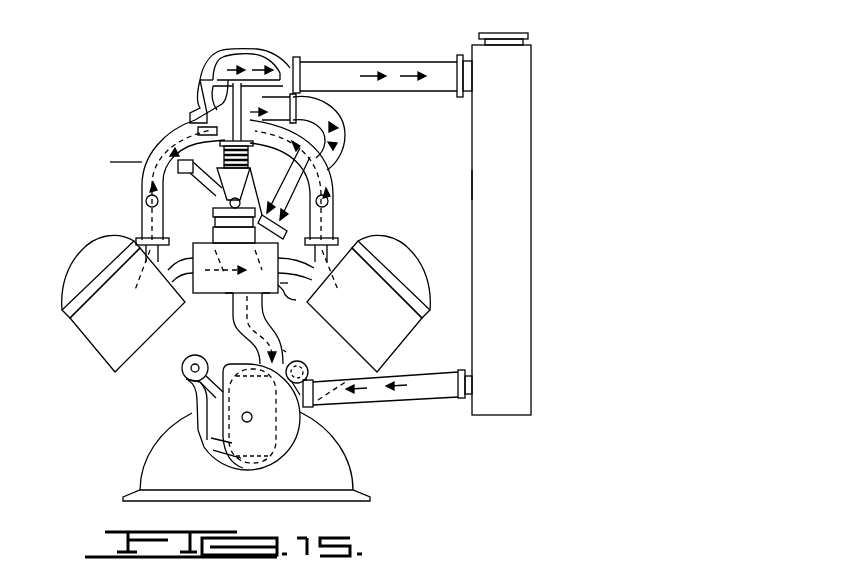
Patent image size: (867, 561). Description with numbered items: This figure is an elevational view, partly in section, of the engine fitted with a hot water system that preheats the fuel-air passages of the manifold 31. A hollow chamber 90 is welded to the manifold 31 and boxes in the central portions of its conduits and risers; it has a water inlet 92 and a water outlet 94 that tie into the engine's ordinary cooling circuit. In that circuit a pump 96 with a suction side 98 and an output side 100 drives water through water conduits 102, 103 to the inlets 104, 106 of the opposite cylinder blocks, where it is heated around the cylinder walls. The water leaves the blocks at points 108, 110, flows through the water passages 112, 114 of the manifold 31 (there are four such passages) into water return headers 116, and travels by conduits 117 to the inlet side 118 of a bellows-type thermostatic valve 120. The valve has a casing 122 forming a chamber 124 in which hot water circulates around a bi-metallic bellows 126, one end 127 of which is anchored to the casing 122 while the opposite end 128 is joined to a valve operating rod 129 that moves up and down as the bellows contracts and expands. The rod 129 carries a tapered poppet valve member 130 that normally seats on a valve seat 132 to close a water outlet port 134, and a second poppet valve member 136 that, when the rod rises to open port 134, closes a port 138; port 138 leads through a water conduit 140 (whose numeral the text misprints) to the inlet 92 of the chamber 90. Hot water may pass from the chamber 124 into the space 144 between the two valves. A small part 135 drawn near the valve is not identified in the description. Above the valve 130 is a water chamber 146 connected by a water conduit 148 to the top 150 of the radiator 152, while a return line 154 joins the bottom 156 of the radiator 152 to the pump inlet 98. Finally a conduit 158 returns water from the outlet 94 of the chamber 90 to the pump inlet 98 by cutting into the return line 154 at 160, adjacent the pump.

The manifold 31 is at (292, 283).
The hollow chamber 90 is at (241, 284).
The water inlet 92 is at (235, 268).
The water outlet 94 is at (237, 301).
The pump 96 is at (294, 448).
The intake or suction side 98 is at (270, 458).
The pressure or output side 100 is at (165, 406).
The water conduit 102 is at (190, 388).
The water conduit 103 is at (305, 337).
The inlet 104 is at (182, 369).
The inlet 106 is at (310, 360).
The point of water exit 108 is at (123, 303).
The point of water exit 110 is at (330, 283).
The water passage 112 is at (140, 235).
The water passage 114 is at (345, 235).
The water return header 116 is at (142, 200).
The conduit 117 is at (153, 147).
The inlet side 118 is at (177, 130).
The bellows-type thermostatic valve 120 is at (200, 107).
The casing 122 is at (222, 198).
The chamber 124 is at (196, 178).
The bi-metallic bellows 126 is at (276, 202).
The end of bellows 127 is at (272, 191).
The opposite end of bellows 128 is at (225, 215).
The valve operating rod 129 is at (286, 184).
The tapered poppet valve member 130 is at (252, 93).
The valve seat 132 is at (205, 72).
The water outlet port 134 is at (290, 58).
The spring seat 135 is at (225, 133).
The poppet valve member 136 is at (224, 153).
The port 138 is at (300, 73).
The water conduit 140 is at (330, 140).
The space 144 is at (210, 97).
The water chamber 146 is at (252, 53).
The water conduit 148 is at (385, 69).
The top of radiator 150 is at (513, 65).
The vehicle water cooling radiator 152 is at (468, 185).
The return line 154 is at (407, 402).
The bottom of radiator 156 is at (531, 390).
The conduit 158 is at (240, 334).
The junction point 160 is at (314, 408).